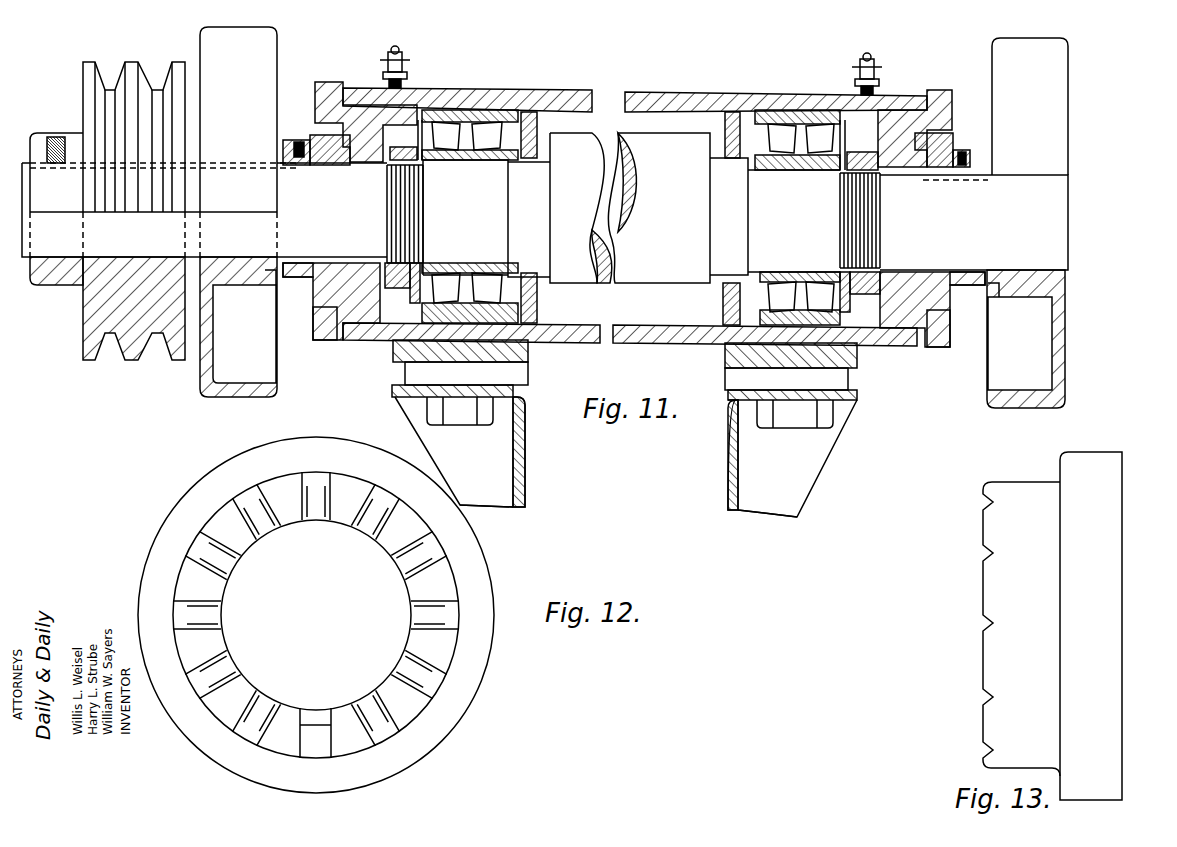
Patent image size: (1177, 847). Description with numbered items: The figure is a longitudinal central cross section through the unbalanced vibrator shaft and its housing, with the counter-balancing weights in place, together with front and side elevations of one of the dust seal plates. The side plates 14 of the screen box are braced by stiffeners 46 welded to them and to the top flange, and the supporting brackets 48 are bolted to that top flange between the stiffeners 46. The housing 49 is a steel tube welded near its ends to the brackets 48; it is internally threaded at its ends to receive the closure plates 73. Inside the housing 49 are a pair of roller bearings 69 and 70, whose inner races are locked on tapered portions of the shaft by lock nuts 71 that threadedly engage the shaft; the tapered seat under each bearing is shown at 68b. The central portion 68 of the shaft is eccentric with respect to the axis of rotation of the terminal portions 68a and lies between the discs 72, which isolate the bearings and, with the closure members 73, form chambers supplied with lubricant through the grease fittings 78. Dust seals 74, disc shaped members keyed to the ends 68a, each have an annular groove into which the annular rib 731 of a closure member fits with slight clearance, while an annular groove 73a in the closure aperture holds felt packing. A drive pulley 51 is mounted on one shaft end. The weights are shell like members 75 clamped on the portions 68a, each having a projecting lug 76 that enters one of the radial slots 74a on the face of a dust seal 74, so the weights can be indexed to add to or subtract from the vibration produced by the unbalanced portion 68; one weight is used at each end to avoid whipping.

In FIG. 11, the side plates 14 is at (526, 458).
In FIG. 11, the stiffeners 46 is at (626, 457).
In FIG. 11, the supporting brackets 48 is at (528, 356).
In FIG. 11, the housing 49 is at (692, 93).
In FIG. 11, the drive pulley 51 is at (157, 92).
In FIG. 11, the central portion of the vibrator shaft 68 is at (630, 208).
In FIG. 11, the terminal portions of the shaft 68a is at (545, 216).
In FIG. 11, the shaft bearing portion 68b is at (633, 217).
In FIG. 11, the roller bearing 69 is at (482, 110).
In FIG. 11, the roller bearing 70 is at (822, 110).
In FIG. 11, the lock nuts 71 is at (633, 216).
In FIG. 11, the discs 72 is at (538, 300).
In FIG. 11, the closure plates 73 is at (334, 338).
In FIG. 11, the annular rib 731 is at (322, 340).
In FIG. 11, the annular groove 73a is at (368, 165).
In FIG. 11, the dust seals 74 is at (308, 290).
In FIG. 12, the dust seals 74 is at (476, 560).
In FIG. 13, the dust seals 74 is at (1118, 598).
In FIG. 12, the radial slots 74a is at (407, 567).
In FIG. 13, the radial slots 74a is at (982, 692).
In FIG. 11, the shell like members 75 is at (634, 217).
In FIG. 11, the projecting lug 76 is at (276, 288).
In FIG. 11, the grease fittings 78 is at (403, 60).